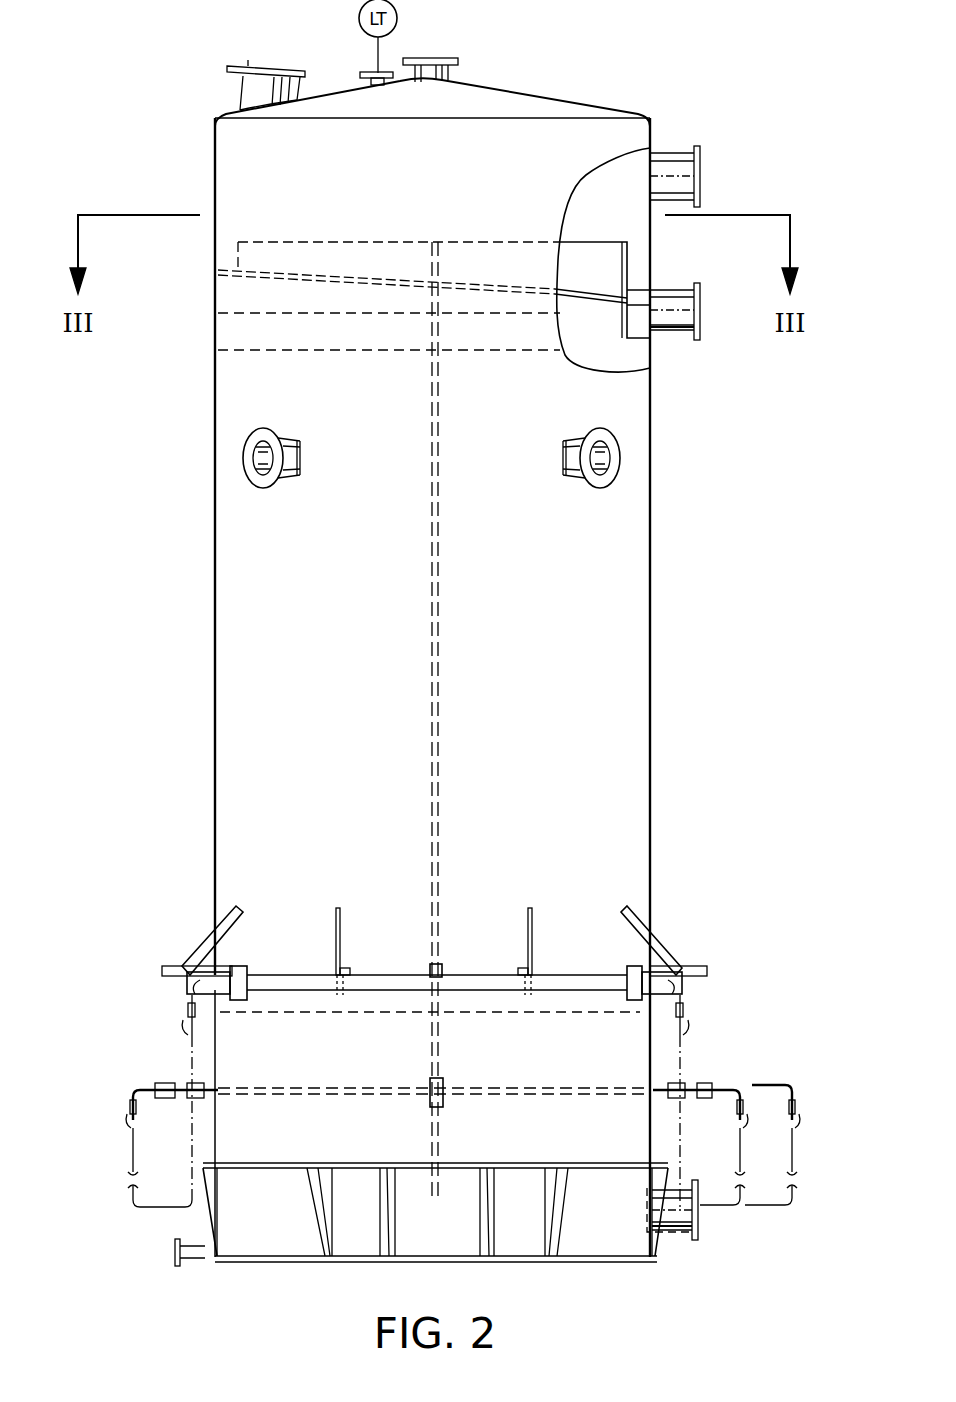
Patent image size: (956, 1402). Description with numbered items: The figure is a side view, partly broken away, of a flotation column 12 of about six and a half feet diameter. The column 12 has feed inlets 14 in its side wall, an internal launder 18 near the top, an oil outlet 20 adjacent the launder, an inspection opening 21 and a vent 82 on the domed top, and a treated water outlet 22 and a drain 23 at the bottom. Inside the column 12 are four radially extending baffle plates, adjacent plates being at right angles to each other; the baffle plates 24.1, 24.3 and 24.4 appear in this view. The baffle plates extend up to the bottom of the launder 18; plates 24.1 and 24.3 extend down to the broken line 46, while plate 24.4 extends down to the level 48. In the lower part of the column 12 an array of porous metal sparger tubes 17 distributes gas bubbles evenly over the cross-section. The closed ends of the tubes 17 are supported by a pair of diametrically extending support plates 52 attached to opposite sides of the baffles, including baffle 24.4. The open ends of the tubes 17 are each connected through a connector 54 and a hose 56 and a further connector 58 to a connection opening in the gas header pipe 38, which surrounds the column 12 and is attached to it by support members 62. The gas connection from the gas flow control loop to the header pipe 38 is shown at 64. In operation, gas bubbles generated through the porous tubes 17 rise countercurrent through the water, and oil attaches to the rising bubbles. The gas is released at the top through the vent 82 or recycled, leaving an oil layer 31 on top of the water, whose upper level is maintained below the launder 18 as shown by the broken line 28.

The flotation column 12 is at (142, 513).
The feed inlets 14 is at (255, 445).
The sparger tubes 17 is at (342, 1086).
The internal launder 18 is at (635, 257).
The oil outlet 20 is at (700, 328).
The inspection opening 21 is at (228, 70).
The treated water outlet 22 is at (698, 1225).
The drain 23 is at (195, 1258).
The baffle plate 24.1 is at (252, 622).
The baffle plate 24.3 is at (612, 652).
The baffle plate 24.4 is at (430, 720).
The broken line 28 is at (248, 314).
The oil layer 31 is at (216, 333).
The gas header pipe 38 is at (662, 980).
The broken line 46 is at (262, 1012).
The level 48 is at (437, 1200).
The support plates 52 is at (430, 1097).
The connector 54 is at (170, 1083).
The hose 56 is at (133, 1150).
The further connector 58 is at (188, 1008).
The support members 62 is at (326, 912).
The gas connection 64 is at (440, 963).
The vent 82 is at (455, 60).